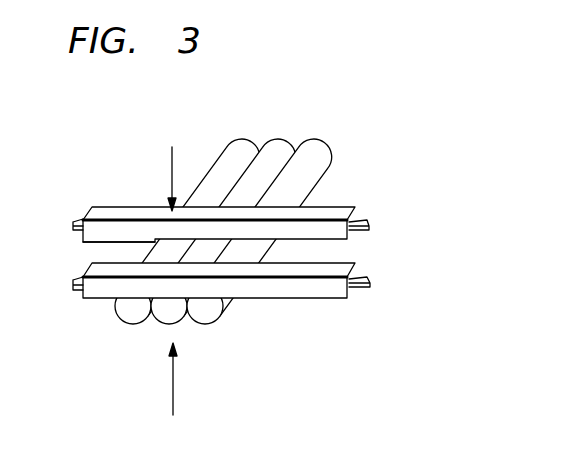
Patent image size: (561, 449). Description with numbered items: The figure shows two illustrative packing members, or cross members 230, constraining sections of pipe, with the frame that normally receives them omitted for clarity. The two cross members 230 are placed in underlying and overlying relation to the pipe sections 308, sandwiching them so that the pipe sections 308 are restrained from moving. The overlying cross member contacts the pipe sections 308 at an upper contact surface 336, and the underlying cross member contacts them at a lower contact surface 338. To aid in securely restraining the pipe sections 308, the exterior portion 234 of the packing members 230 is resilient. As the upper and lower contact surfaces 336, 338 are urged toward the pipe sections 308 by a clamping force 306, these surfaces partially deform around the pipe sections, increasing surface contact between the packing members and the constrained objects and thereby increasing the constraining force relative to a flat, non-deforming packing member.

The cross members 230 is at (385, 231).
The exterior portion 234 is at (118, 209).
The clamping force 306 is at (172, 147).
The pipe sections 308 is at (243, 148).
The upper contact surface 336 is at (103, 244).
The lower contact surface 338 is at (306, 275).